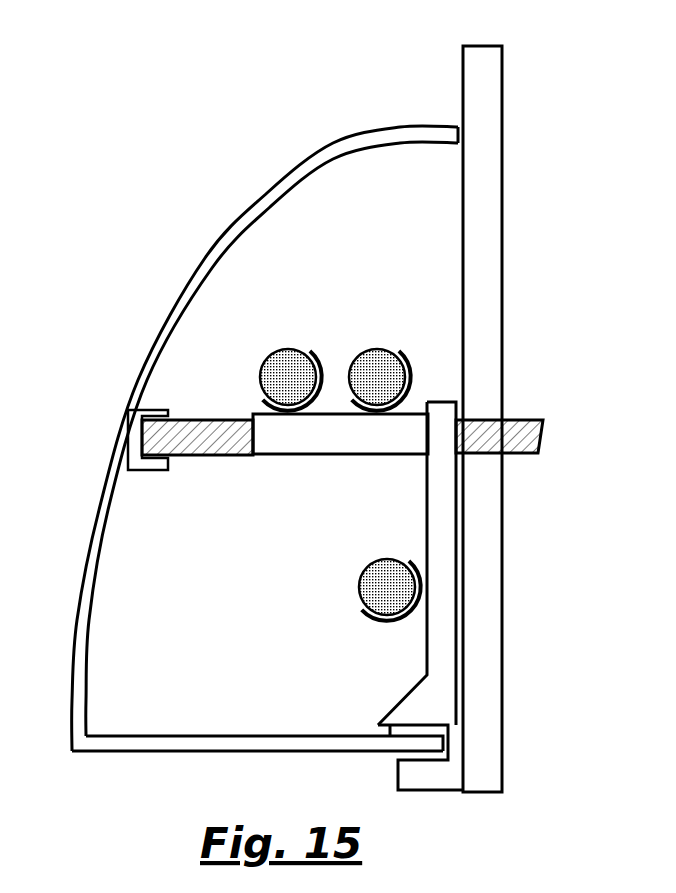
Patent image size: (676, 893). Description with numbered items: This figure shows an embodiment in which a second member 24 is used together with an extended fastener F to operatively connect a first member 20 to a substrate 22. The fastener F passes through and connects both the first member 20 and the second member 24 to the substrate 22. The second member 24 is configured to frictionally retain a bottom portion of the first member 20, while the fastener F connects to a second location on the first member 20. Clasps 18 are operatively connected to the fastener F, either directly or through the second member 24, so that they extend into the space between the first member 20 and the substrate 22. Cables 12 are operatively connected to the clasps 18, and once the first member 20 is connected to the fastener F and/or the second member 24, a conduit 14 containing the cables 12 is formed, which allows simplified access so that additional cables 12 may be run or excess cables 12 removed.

The cables 12 is at (337, 482).
The conduit 14 is at (267, 714).
The clasps 18 is at (322, 400).
The first member 20 is at (175, 293).
The substrate 22 is at (482, 110).
The second member 24 is at (440, 688).
The fastener F is at (543, 433).